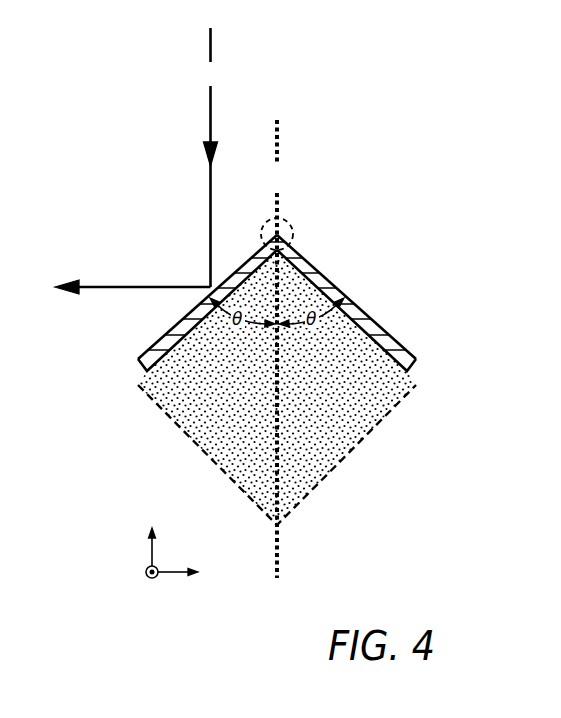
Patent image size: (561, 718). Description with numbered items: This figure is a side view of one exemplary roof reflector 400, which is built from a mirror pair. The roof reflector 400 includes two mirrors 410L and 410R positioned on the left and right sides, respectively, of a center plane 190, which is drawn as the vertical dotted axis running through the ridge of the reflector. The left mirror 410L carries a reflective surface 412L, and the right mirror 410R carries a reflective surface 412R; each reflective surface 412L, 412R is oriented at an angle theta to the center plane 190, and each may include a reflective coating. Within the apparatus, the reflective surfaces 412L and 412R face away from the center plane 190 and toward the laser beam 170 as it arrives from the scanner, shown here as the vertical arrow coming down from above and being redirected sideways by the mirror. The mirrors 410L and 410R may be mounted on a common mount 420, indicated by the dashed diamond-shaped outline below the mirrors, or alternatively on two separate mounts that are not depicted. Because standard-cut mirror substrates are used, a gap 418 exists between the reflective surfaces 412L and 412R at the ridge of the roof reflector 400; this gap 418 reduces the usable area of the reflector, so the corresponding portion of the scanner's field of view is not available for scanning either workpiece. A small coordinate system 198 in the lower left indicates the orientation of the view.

The laser beam 170 is at (210, 157).
The center plane 190 is at (275, 349).
The roof reflector 400 is at (415, 218).
The gap 418 is at (291, 222).
The reflective surface 412L is at (166, 333).
The reflective surface 412R is at (364, 304).
The mirror 410L is at (140, 371).
The mirror 410R is at (414, 371).
The common mount 420 is at (330, 473).
The coordinate system 198 is at (134, 562).